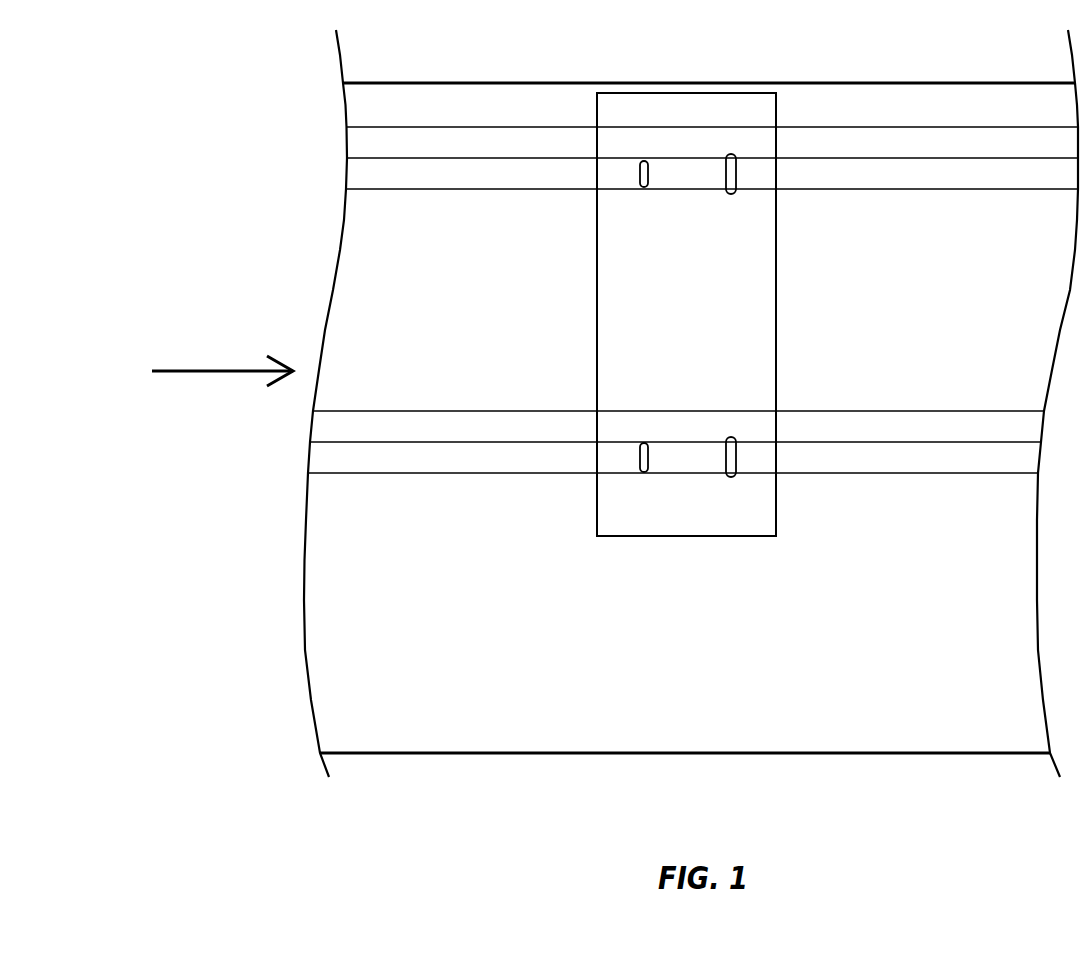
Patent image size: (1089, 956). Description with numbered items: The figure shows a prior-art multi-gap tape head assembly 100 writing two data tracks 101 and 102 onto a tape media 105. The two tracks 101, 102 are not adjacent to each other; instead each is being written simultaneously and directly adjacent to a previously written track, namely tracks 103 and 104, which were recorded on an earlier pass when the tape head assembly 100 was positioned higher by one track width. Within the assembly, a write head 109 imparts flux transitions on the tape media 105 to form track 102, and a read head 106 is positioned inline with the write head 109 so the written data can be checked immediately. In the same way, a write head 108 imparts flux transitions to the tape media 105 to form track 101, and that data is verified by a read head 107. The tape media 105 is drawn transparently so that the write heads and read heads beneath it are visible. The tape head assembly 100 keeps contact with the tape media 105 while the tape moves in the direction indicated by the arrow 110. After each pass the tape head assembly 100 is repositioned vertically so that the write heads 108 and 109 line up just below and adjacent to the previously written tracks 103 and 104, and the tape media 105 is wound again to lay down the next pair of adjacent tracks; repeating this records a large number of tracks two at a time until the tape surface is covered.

The multi-gap tape head assembly 100 is at (776, 279).
The data track 101 is at (432, 460).
The data track 102 is at (437, 177).
The previously written track 103 is at (455, 423).
The previously written track 104 is at (455, 135).
The tape media 105 is at (857, 753).
The read head 106 is at (638, 173).
The read head 107 is at (638, 457).
The write head 108 is at (738, 457).
The write head 109 is at (738, 162).
The arrow 110 is at (164, 373).